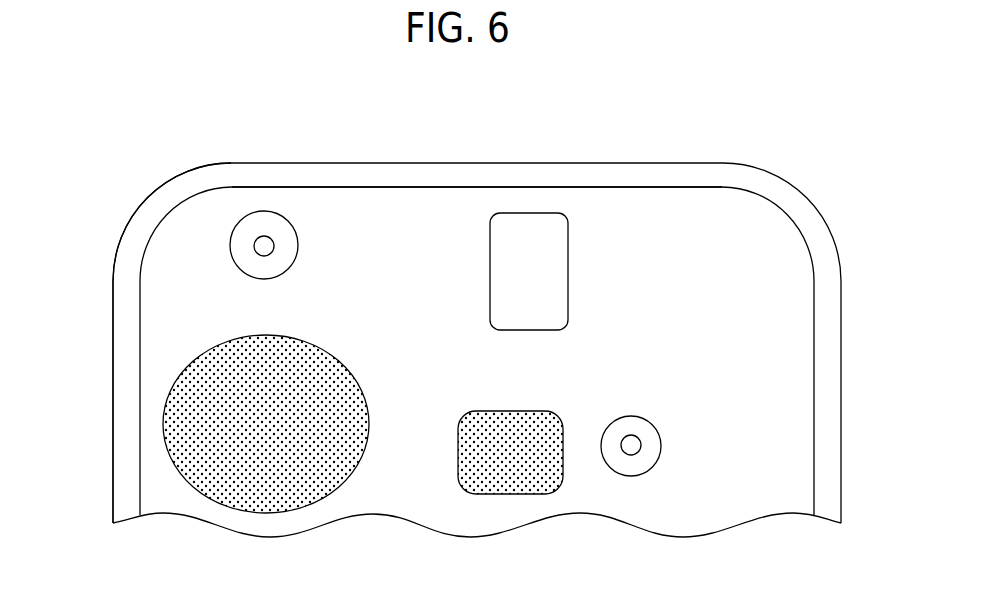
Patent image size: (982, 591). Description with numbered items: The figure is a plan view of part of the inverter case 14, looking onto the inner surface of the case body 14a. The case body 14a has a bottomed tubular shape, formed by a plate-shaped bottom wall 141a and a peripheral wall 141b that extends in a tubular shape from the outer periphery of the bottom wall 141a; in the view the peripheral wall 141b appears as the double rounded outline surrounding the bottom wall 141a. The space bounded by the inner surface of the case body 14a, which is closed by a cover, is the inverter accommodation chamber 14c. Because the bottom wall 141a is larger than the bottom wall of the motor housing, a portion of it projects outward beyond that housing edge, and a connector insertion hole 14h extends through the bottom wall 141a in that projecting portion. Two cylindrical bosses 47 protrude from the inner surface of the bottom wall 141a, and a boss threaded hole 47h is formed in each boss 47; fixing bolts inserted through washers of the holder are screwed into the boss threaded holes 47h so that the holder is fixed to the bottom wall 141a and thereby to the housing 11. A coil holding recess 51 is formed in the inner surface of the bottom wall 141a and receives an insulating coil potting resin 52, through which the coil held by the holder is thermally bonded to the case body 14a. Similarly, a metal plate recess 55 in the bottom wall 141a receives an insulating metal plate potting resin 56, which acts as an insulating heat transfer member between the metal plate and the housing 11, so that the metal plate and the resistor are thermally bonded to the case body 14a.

The housing 11 is at (818, 167).
The inverter case 14 is at (818, 215).
The case body 14a is at (150, 203).
The inverter accommodation chamber 14c is at (734, 308).
The connector insertion hole 14h is at (528, 218).
The bottom wall 141a is at (757, 505).
The peripheral wall 141b is at (118, 343).
The boss 47 is at (230, 246).
The boss threaded hole 47h is at (274, 248).
The coil holding recess 51 is at (352, 385).
The coil potting resin 52 is at (232, 343).
The metal plate recess 55 is at (463, 448).
The metal plate potting resin 56 is at (522, 412).